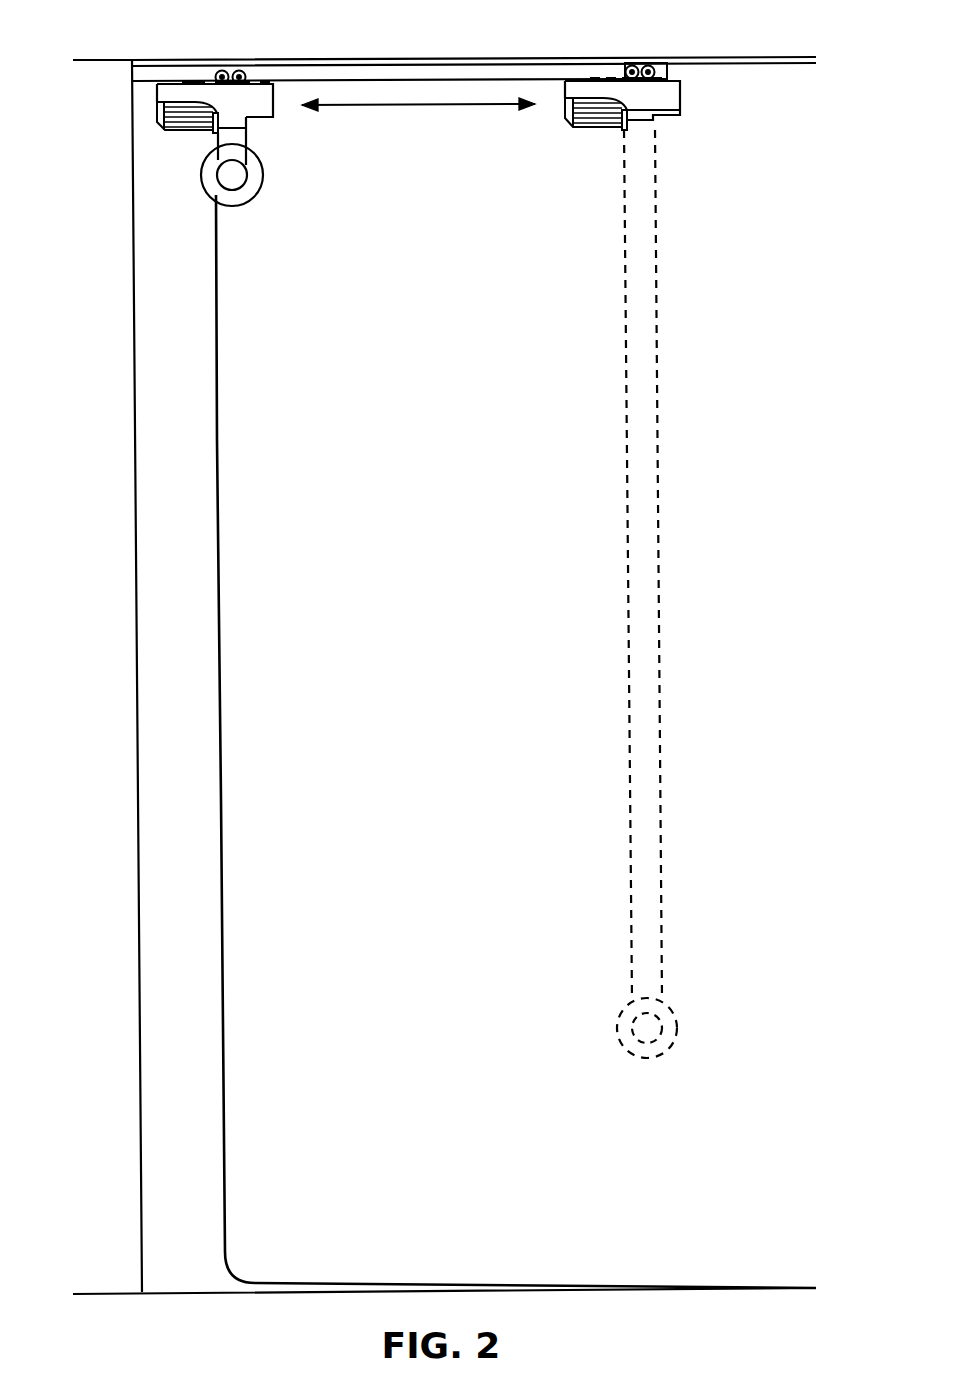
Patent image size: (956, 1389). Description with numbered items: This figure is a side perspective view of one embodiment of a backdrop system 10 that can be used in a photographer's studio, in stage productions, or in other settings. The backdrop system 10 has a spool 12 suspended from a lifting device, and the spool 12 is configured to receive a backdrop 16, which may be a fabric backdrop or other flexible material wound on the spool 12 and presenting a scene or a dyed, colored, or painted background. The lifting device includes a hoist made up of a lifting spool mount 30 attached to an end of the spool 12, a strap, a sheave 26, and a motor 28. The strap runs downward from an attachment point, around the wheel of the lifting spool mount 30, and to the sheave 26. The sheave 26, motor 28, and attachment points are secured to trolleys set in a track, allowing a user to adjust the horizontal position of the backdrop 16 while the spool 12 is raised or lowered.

The backdrop system 10 is at (746, 179).
The spool 12 is at (238, 219).
The backdrop 16 is at (219, 443).
The sheave 26 is at (650, 122).
The motor 28 is at (592, 124).
The lifting spool mount 30 is at (252, 190).